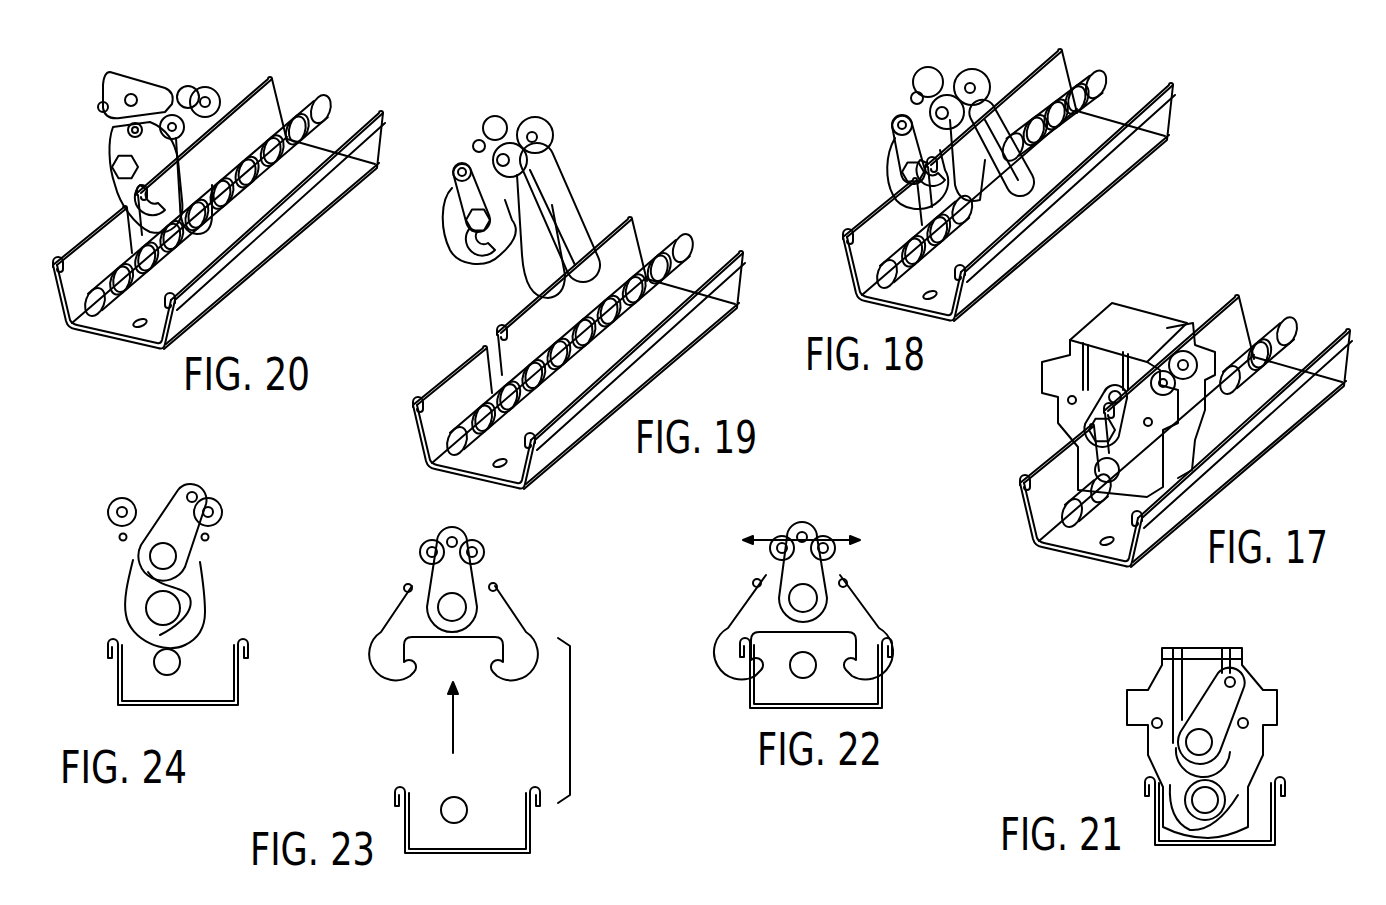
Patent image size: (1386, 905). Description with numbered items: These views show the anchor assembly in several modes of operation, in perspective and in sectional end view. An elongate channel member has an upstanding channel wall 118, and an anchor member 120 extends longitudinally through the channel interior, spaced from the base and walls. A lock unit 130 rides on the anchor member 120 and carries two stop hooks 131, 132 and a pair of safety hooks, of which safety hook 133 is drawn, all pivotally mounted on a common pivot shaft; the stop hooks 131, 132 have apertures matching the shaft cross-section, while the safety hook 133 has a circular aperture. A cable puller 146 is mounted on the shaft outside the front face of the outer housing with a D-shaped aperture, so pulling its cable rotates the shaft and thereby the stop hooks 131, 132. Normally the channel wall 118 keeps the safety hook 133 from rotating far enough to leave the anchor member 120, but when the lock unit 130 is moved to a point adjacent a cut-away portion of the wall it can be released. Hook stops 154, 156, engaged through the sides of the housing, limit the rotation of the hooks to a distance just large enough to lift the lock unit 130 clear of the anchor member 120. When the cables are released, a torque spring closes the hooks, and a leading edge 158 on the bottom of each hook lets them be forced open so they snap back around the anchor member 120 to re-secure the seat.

In FIG. 19, the channel wall 118 is at (458, 397).
In FIG. 20, the anchor member 120 is at (101, 310).
In FIG. 17, the lock unit 130 is at (1176, 305).
In FIG. 20, the stop hook 131 is at (177, 197).
In FIG. 19, the stop hook 131 is at (530, 232).
In FIG. 18, the stop hook 131 is at (995, 132).
In FIG. 24, the stop hook 131 is at (193, 582).
In FIG. 23, the stop hook 131 is at (507, 628).
In FIG. 22, the stop hook 131 is at (852, 620).
In FIG. 19, the stop hook 132 is at (558, 200).
In FIG. 18, the stop hook 132 is at (975, 165).
In FIG. 20, the safety hook 133 is at (145, 177).
In FIG. 19, the safety hook 133 is at (467, 252).
In FIG. 24, the safety hook 133 is at (140, 598).
In FIG. 23, the safety hook 133 is at (400, 636).
In FIG. 22, the safety hook 133 is at (760, 620).
In FIG. 24, the cable puller 146 is at (168, 520).
In FIG. 22, the cable puller 146 is at (807, 572).
In FIG. 23, the hook stop 154 is at (405, 586).
In FIG. 23, the hook stop 156 is at (497, 585).
In FIG. 24, the leading edge 158 is at (138, 658).